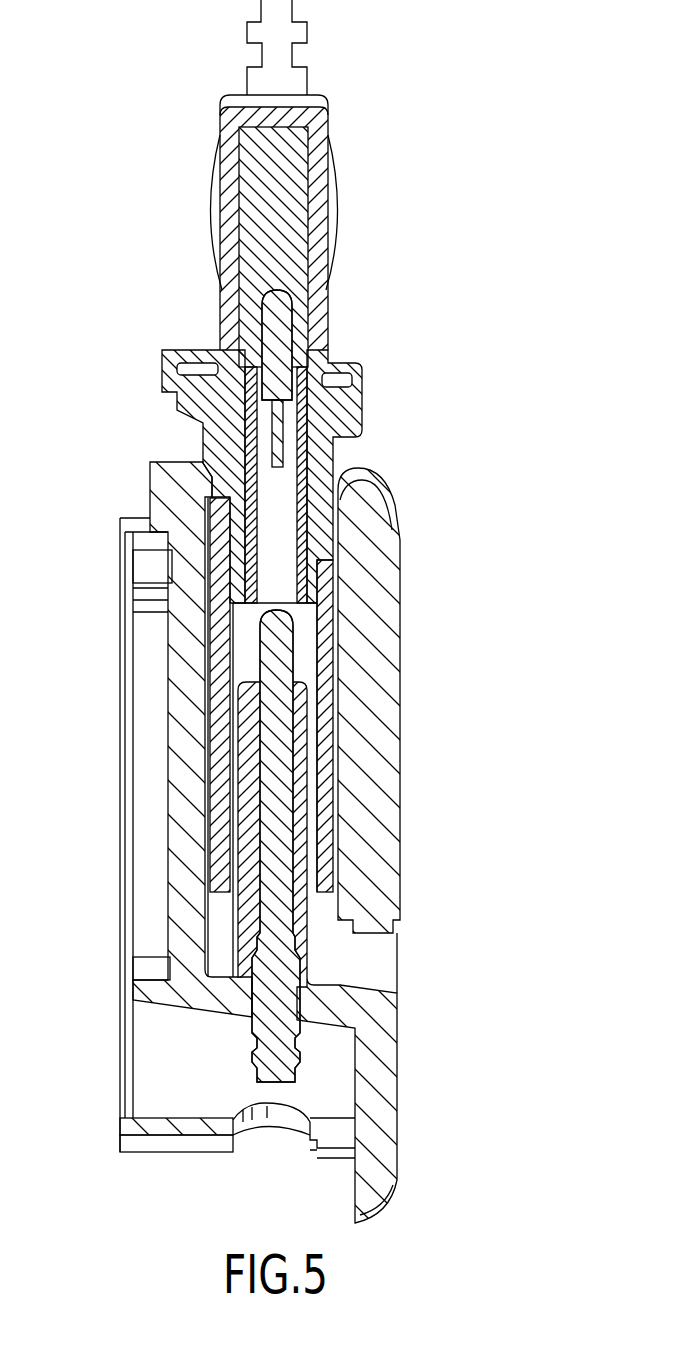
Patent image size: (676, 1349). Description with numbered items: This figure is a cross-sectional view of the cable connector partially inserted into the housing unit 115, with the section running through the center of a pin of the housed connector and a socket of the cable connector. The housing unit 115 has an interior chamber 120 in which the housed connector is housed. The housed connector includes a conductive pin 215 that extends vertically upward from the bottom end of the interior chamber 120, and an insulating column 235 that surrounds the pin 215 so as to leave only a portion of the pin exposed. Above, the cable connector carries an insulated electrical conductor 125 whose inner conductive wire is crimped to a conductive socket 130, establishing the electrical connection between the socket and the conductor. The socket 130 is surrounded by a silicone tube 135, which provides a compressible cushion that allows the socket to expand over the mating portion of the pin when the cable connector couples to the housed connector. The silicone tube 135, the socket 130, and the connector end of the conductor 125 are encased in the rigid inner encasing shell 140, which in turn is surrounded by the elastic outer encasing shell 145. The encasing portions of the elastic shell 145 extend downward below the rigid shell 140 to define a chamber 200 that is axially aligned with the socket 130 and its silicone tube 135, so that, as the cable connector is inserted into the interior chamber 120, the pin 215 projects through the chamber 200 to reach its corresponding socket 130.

The housing unit 115 is at (408, 786).
The interior chamber 120 is at (310, 668).
The insulated electrical conductor 125 is at (292, 464).
The conductive socket 130 is at (282, 521).
The silicone tube 135 is at (240, 408).
The rigid inner encasing shell 140 is at (318, 165).
The elastic outer encasing shell 145 is at (338, 196).
The chamber 200 is at (283, 583).
The conductive pin 215 is at (307, 630).
The insulating column 235 is at (234, 723).